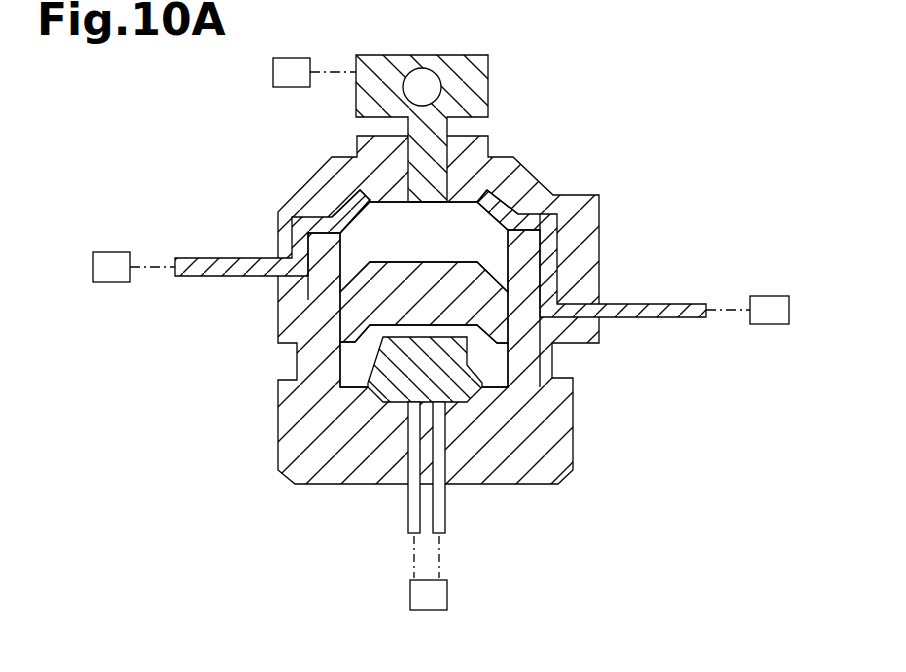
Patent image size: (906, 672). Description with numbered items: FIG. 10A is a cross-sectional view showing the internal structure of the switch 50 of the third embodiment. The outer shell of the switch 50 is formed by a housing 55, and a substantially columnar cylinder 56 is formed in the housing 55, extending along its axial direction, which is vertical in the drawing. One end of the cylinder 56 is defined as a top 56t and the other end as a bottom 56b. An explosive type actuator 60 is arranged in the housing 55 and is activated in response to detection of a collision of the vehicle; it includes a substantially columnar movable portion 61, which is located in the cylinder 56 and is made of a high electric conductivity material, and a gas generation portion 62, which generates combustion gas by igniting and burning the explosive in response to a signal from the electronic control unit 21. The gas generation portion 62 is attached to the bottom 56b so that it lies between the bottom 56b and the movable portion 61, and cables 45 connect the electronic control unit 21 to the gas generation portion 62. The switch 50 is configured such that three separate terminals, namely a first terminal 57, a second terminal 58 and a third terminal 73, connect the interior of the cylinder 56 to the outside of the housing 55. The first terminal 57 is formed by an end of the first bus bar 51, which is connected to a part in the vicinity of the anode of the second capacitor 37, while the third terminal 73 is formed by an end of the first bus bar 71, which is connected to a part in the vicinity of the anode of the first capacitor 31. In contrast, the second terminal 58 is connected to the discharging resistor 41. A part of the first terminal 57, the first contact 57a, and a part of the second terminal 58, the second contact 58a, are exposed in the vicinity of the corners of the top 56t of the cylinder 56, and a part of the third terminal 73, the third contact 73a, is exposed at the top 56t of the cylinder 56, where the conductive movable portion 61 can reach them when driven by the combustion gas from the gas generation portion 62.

The switch 50 is at (677, 99).
The housing 55 is at (592, 242).
The third terminal 73 is at (478, 78).
The first bus bar 71 is at (470, 128).
The third contact 73a is at (386, 202).
The cylinder 56 is at (522, 370).
The top 56t is at (450, 205).
The bottom 56b is at (488, 381).
The first terminal 57 is at (641, 316).
The first bus bar 51 is at (593, 276).
The first contact 57a is at (497, 192).
The second terminal 58 is at (203, 265).
The second contact 58a is at (343, 213).
The explosive type actuator 60 is at (231, 320).
The movable portion 61 is at (348, 317).
The gas generation portion 62 is at (380, 367).
The cables 45 is at (417, 517).
The electronic control unit 21 is at (428, 573).
The first capacitor 31 is at (314, 72).
The discharging resistor 41 is at (134, 267).
The second capacitor 37 is at (747, 310).